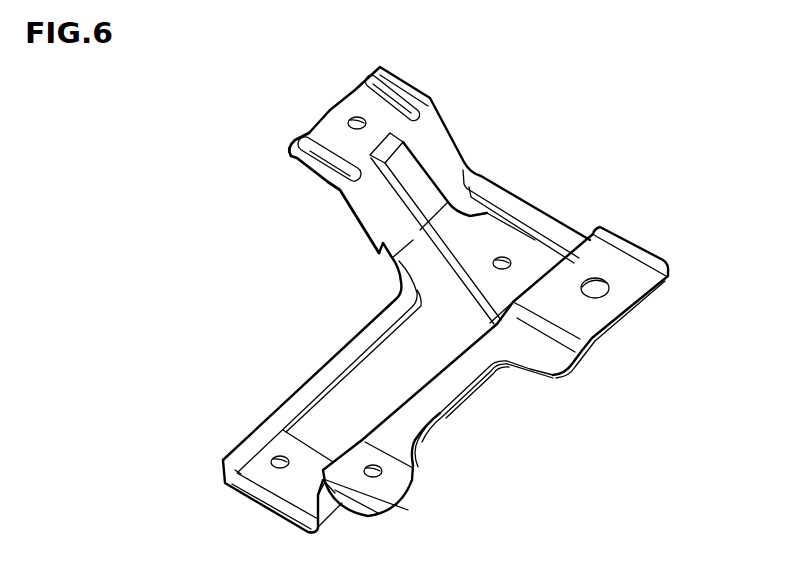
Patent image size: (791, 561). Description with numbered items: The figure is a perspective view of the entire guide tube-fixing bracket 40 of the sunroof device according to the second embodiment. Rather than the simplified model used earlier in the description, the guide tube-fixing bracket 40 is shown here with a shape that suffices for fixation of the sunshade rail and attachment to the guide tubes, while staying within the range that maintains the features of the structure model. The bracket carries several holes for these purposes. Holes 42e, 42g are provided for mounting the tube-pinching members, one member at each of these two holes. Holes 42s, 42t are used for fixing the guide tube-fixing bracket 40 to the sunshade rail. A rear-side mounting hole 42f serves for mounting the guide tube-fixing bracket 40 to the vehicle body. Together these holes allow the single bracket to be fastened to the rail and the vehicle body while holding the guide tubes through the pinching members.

The guide tube-fixing bracket 40 is at (485, 117).
The hole for mounting tube-pinching member 42g is at (355, 120).
The hole for fixing to sunshade rail 42s is at (505, 260).
The rear-side mounting hole 42f is at (610, 290).
The hole for fixing to sunshade rail 42t is at (280, 457).
The hole for mounting tube-pinching member 42e is at (381, 468).